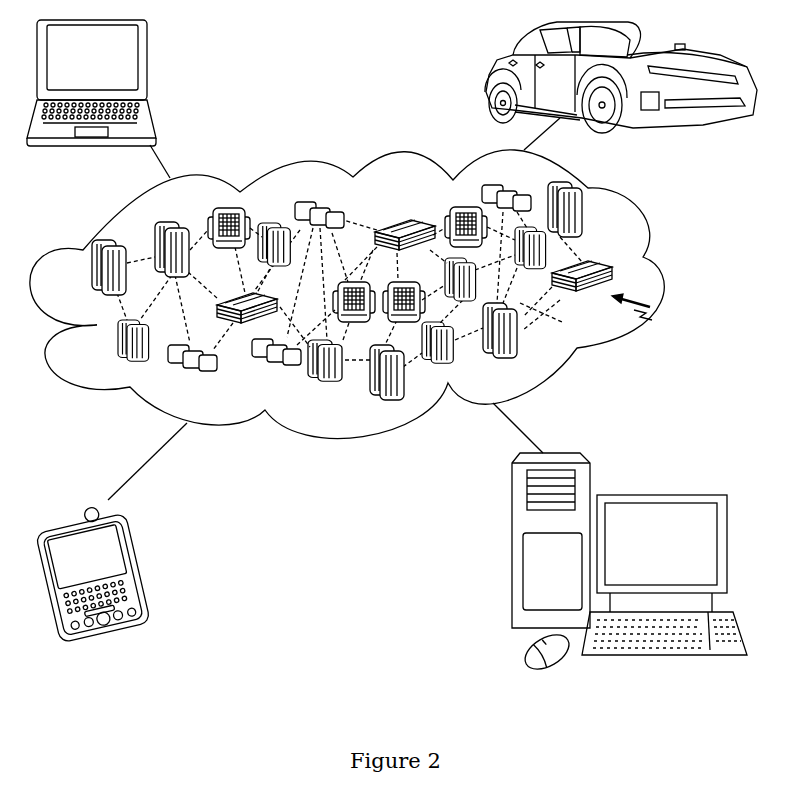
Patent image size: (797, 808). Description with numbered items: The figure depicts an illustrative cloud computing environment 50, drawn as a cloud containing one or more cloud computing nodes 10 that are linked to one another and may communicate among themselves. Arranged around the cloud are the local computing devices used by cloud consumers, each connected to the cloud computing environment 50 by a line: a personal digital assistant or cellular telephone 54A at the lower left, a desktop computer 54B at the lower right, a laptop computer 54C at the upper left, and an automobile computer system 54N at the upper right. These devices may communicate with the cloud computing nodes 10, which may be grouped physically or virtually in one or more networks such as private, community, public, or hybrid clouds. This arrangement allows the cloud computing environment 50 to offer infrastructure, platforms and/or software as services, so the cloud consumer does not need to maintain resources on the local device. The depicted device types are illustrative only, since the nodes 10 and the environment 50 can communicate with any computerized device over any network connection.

The cloud computing node 10 is at (653, 318).
The cloud computing environment 50 is at (660, 273).
The personal digital assistant (PDA) or cellular telephone 54A is at (138, 567).
The desktop computer 54B is at (660, 495).
The laptop computer 54C is at (147, 65).
The automobile computer system 54N is at (490, 80).